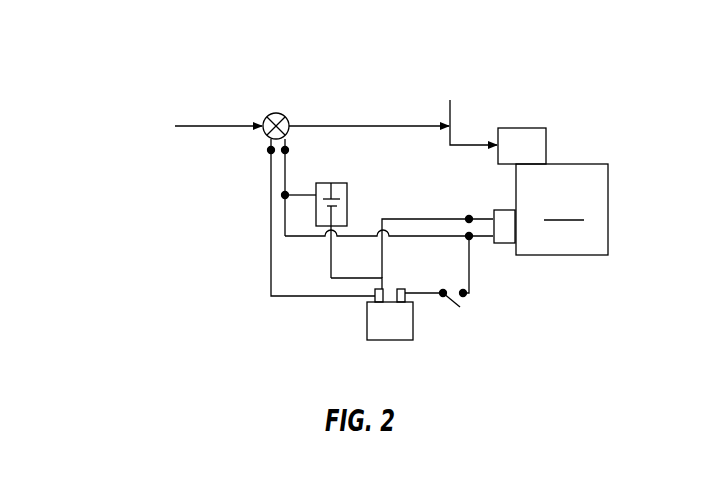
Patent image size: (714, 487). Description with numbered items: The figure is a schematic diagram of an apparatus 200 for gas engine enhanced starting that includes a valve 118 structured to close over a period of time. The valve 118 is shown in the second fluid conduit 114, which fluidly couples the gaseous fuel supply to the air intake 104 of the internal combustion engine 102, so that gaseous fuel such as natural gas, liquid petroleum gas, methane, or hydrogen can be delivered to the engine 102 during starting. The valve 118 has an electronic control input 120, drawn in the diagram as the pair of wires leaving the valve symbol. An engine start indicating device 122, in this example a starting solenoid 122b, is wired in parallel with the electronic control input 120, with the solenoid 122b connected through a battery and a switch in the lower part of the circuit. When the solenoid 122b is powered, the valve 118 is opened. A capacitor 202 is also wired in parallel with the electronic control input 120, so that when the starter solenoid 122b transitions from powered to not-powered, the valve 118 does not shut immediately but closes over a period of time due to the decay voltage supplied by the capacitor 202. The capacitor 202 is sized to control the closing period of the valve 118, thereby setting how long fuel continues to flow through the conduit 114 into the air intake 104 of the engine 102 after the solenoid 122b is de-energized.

The apparatus 200 is at (182, 42).
The second fluid conduit 114 is at (222, 123).
The valve 118 is at (268, 113).
The electronic control input 120 is at (268, 152).
The capacitor 202 is at (332, 183).
The air intake 104 is at (450, 112).
The internal combustion engine 102 is at (562, 209).
The engine start indicating device 122 is at (505, 210).
The starting solenoid 122b is at (505, 243).